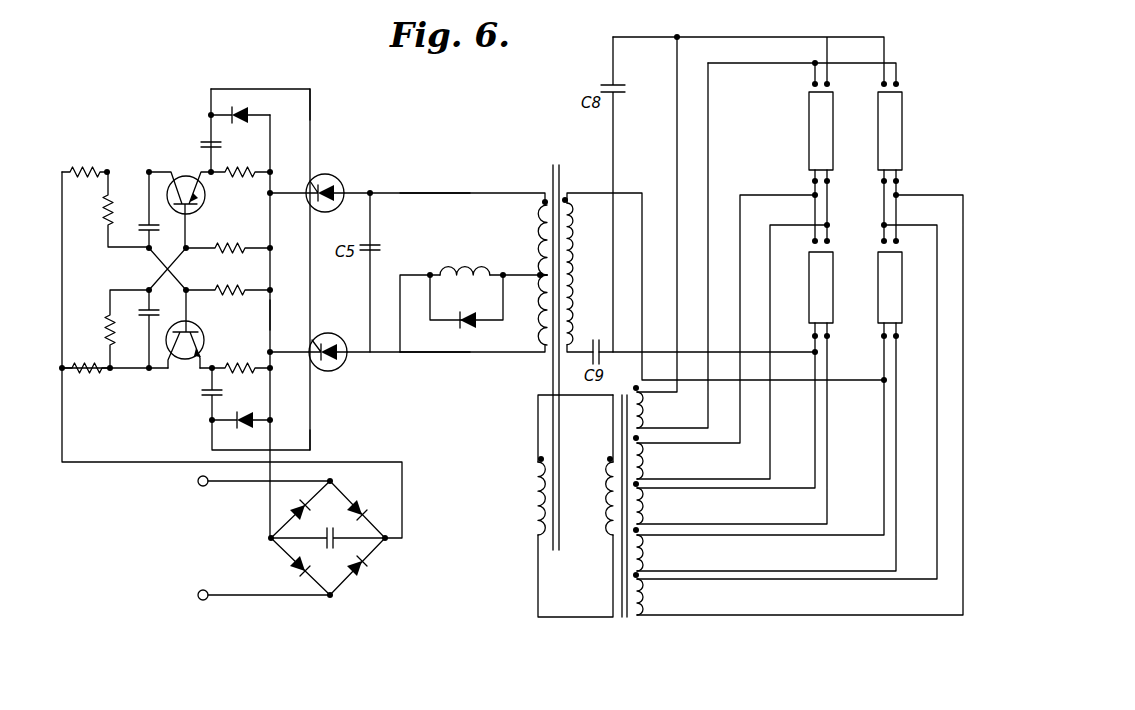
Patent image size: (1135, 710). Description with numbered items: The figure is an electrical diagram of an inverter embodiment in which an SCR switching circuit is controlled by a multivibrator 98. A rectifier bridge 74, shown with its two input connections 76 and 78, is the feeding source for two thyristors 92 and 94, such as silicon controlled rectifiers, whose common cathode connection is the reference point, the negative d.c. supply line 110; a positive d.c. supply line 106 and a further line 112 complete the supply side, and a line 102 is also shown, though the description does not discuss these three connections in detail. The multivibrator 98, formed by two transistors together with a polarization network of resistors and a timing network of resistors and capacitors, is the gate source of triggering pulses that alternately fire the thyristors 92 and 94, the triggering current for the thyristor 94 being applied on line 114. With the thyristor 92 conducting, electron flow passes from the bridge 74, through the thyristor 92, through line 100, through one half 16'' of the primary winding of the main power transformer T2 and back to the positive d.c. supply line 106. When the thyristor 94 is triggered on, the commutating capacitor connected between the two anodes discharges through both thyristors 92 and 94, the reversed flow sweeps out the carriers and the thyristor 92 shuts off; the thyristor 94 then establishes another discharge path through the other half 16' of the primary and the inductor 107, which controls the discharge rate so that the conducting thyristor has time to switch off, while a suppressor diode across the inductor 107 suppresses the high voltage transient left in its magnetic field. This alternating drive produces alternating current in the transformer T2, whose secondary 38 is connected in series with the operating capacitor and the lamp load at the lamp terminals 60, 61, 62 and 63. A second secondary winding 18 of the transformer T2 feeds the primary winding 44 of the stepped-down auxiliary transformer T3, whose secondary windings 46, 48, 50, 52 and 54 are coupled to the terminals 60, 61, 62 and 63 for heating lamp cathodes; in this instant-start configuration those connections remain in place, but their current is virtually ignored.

The multivibrator 98 is at (155, 144).
The positive supply conductor 112 is at (311, 108).
The line 114 is at (311, 441).
The negative d.c. supply line 110 is at (272, 313).
The thyristor 92 is at (334, 178).
The thyristor 94 is at (338, 332).
The line 100 is at (433, 193).
The return lead from transformer T2 winding 102 is at (438, 353).
The positive d.c. supply line 106 is at (430, 272).
The inductor 107 is at (478, 272).
The rectifier bridge 74 is at (366, 600).
The AC input terminal 76 is at (222, 483).
The AC input terminal 78 is at (222, 597).
The main power transformer T2 is at (556, 166).
The half of the primary winding 16'' is at (519, 236).
The half of the primary winding 16' is at (519, 307).
The secondary of the main power transformer 38 is at (578, 288).
The auxiliary transformer T3 is at (625, 622).
The second secondary winding 18 is at (537, 517).
The primary winding of the auxiliary transformer 44 is at (607, 532).
The secondary winding 46 is at (648, 418).
The secondary winding 48 is at (648, 469).
The secondary winding 50 is at (648, 511).
The secondary winding 52 is at (648, 558).
The secondary winding 54 is at (648, 604).
The lamp terminal 60 is at (806, 86).
The lamp terminal 61 is at (806, 244).
The lamp terminal 62 is at (906, 86).
The lamp terminal 63 is at (906, 244).